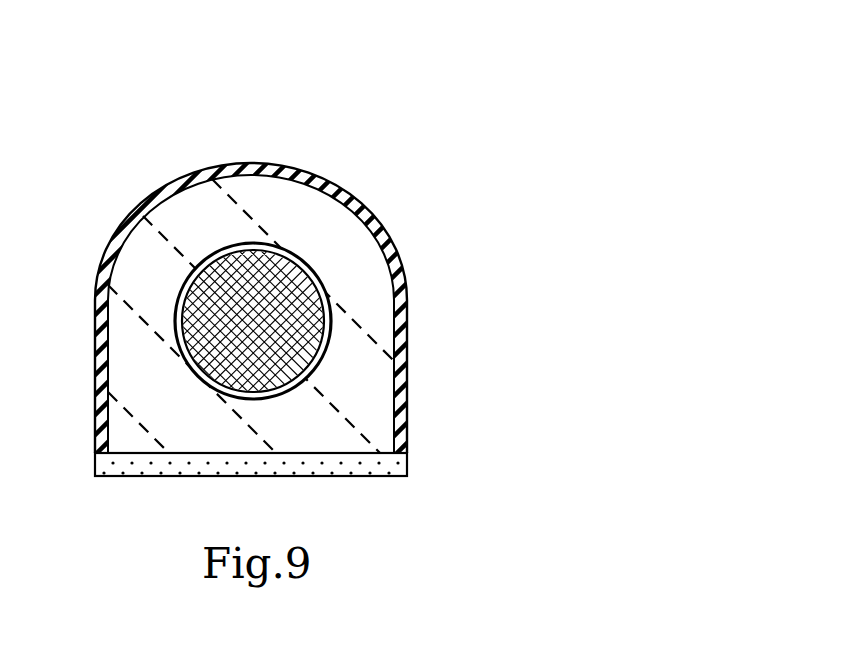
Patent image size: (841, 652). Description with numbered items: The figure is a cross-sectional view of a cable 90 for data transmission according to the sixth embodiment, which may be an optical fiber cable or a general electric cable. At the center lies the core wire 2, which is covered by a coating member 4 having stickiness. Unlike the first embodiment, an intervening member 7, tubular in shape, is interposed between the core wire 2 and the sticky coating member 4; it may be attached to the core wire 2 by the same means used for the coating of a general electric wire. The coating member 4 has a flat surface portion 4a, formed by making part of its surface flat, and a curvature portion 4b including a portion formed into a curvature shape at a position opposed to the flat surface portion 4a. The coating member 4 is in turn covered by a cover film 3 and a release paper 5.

The cable 90 is at (321, 119).
The core wire 2 is at (176, 284).
The cover film 3 is at (420, 326).
The coating member 4 is at (373, 364).
The flat surface portion 4a is at (202, 454).
The curvature portion 4b is at (243, 168).
The release paper 5 is at (268, 474).
The intervening member 7 is at (178, 313).